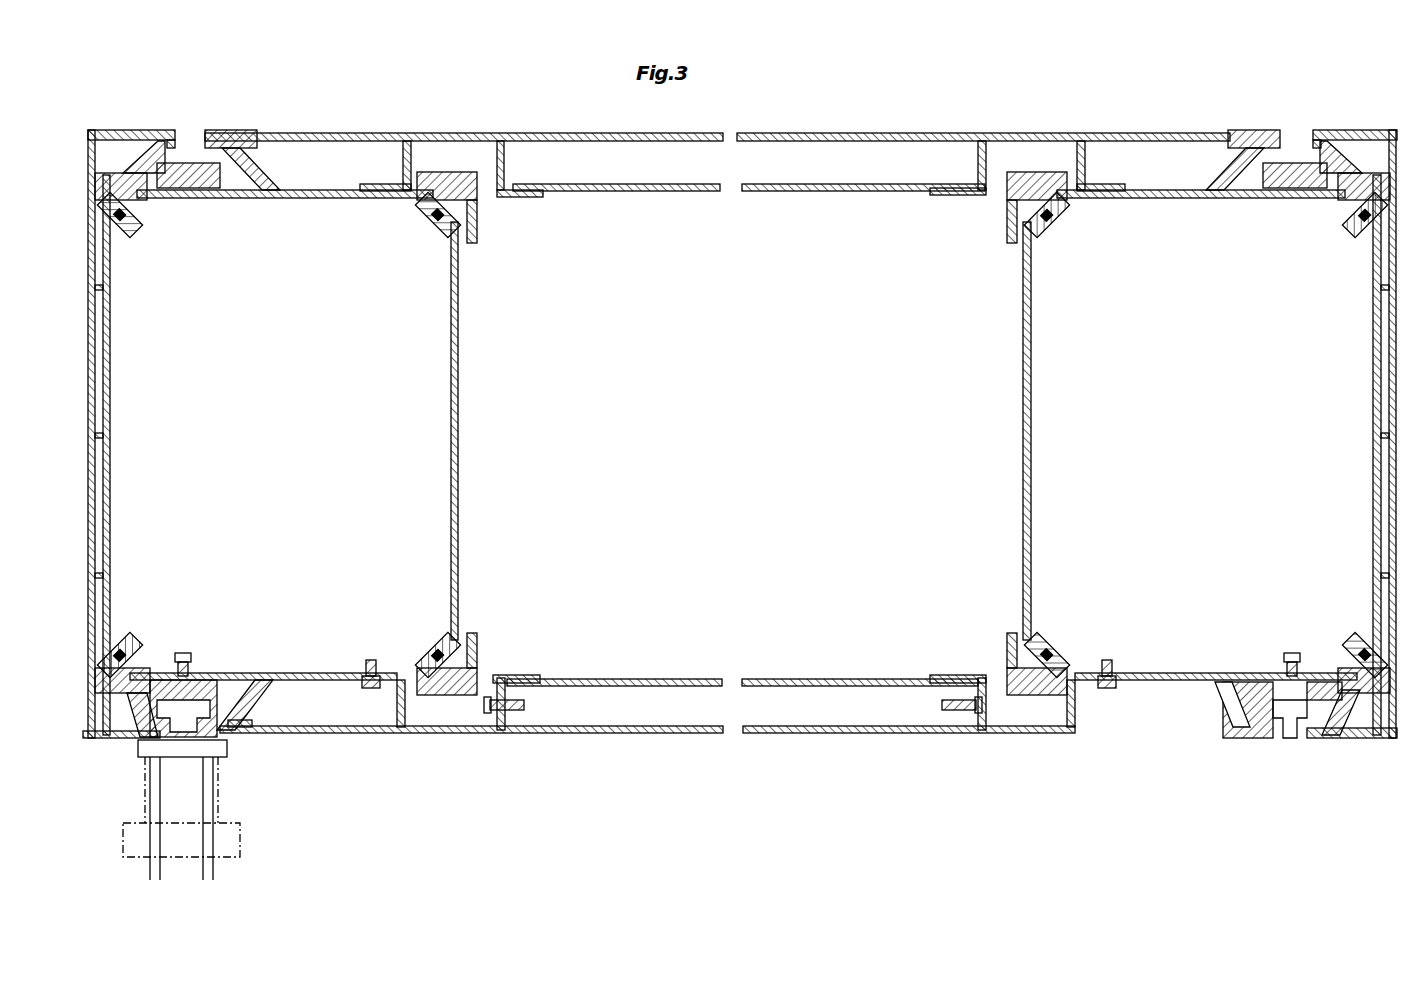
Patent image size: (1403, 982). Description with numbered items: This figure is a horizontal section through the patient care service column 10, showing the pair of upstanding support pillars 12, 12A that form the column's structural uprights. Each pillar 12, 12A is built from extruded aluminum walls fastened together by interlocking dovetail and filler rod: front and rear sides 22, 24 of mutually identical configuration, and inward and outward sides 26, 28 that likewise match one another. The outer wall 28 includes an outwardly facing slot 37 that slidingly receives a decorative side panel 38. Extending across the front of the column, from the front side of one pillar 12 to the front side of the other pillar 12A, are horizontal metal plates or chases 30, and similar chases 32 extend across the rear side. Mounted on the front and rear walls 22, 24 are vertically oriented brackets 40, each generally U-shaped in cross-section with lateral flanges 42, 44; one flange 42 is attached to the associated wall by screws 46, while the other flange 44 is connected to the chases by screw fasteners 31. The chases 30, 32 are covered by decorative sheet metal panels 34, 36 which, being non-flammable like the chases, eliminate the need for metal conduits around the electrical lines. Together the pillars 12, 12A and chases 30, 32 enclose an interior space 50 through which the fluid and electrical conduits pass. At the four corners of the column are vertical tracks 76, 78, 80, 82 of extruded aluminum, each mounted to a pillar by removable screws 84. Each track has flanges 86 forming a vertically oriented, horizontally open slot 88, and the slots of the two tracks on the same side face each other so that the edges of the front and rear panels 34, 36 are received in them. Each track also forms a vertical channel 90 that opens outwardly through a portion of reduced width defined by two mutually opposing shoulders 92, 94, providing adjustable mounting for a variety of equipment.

The patient care service column 10 is at (741, 386).
The support pillar 12 is at (1020, 398).
The support pillar 12A is at (462, 325).
The front side 22 is at (300, 672).
The rear side 24 is at (318, 200).
The inward side 26 is at (460, 467).
The outward side 28 is at (112, 460).
The chase 30 is at (712, 678).
The screw fastener 31 is at (480, 734).
The chase 32 is at (712, 193).
The sheet metal panel 34 is at (620, 735).
The sheet metal panel 36 is at (720, 137).
The slot 37 is at (87, 653).
The decorative side panel 38 is at (87, 382).
The bracket 40 is at (468, 137).
The flange 42 is at (398, 705).
The flange 44 is at (505, 714).
The screw 46 is at (366, 660).
The interior space 50 is at (640, 212).
The vertical track 76 is at (205, 752).
The vertical track 78 is at (1330, 741).
The vertical track 80 is at (1335, 133).
The vertical track 82 is at (150, 135).
The screw 84 is at (185, 653).
The flange 86 is at (245, 133).
The slot 88 is at (252, 722).
The vertical channel 90 is at (190, 157).
The shoulder 92 is at (1266, 740).
The shoulder 94 is at (1300, 741).